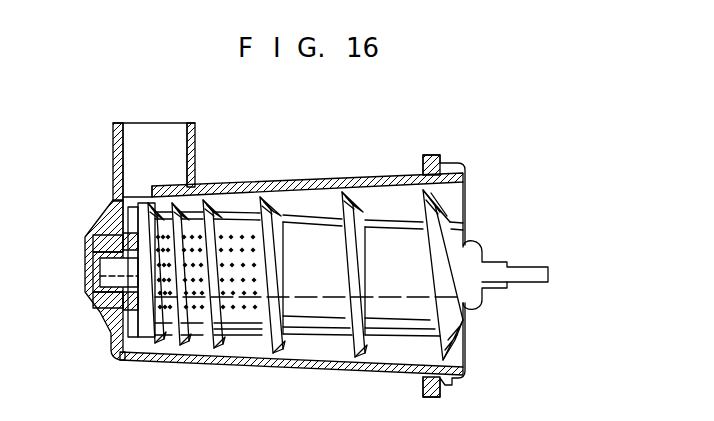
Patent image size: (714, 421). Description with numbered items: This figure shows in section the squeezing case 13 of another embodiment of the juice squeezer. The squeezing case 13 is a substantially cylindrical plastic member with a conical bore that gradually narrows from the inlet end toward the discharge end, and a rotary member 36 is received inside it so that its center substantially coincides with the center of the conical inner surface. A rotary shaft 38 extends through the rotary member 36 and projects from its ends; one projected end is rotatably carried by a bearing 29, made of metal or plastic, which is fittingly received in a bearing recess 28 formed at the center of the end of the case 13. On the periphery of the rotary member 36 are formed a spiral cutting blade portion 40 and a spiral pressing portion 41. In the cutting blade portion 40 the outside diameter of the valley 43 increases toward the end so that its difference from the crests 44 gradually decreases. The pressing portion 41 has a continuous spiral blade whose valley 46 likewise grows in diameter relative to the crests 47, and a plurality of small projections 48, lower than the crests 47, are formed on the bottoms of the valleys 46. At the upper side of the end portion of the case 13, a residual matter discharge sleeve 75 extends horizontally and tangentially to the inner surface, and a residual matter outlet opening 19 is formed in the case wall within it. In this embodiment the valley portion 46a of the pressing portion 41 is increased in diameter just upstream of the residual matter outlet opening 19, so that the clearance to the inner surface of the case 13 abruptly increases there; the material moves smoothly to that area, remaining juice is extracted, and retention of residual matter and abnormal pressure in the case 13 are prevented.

The squeezing case 13 is at (375, 372).
The residual matter outlet opening 19 is at (145, 198).
The bearing recess 28 is at (97, 300).
The bearing 29 is at (97, 262).
The rotary member 36 is at (325, 337).
The rotary shaft 38 is at (107, 273).
The spiral cutting blade portion 40 is at (417, 323).
The spiral pressing portion 41 is at (252, 335).
The valley 43 is at (383, 218).
The crests 44 is at (437, 206).
The valley 46 is at (248, 207).
The valley portion 46a is at (162, 200).
The crests 47 is at (265, 216).
The small projections 48 is at (245, 310).
The residual matter discharge sleeve 75 is at (150, 130).